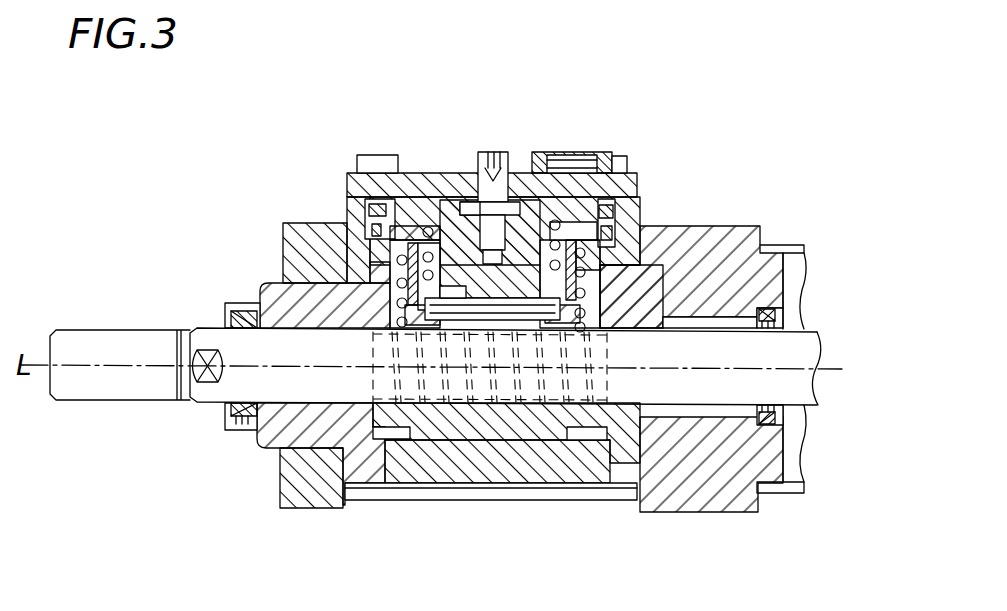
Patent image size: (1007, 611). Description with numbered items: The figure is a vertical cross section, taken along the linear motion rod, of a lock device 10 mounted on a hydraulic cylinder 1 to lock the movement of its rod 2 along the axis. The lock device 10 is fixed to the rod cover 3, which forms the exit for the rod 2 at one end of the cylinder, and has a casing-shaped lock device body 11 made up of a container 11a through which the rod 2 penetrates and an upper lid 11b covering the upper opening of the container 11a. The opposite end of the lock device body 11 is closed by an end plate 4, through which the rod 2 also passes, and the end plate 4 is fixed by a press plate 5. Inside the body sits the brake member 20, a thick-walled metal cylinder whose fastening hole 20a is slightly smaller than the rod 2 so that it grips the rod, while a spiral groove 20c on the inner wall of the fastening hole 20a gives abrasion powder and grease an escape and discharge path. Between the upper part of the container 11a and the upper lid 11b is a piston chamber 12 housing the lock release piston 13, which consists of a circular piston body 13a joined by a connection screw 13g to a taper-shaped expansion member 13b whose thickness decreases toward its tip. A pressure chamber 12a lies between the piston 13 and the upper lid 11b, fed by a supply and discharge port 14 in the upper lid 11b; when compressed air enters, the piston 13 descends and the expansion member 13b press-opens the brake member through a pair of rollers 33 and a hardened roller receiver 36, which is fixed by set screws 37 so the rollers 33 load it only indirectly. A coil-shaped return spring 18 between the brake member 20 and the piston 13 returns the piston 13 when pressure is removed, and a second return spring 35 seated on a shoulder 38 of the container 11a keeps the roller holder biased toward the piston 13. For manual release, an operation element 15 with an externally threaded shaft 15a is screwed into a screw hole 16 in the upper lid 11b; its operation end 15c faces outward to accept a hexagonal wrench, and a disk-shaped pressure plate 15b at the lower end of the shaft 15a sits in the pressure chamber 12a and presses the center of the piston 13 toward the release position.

The hydraulic cylinder 1 is at (787, 244).
The rod 2 is at (712, 378).
The rod cover 3 is at (728, 263).
The end plate 4 is at (273, 430).
The press plate 5 is at (307, 494).
The lock device 10 is at (335, 151).
The lock device body 11 is at (636, 173).
The container 11a is at (413, 462).
The upper lid 11b is at (372, 188).
The piston chamber 12 is at (312, 245).
The pressure chamber 12a is at (392, 200).
The piston 13 is at (585, 195).
The piston body 13a is at (622, 207).
The expansion member 13b is at (623, 227).
The connection screw 13g is at (376, 210).
The supply and discharge port 14 is at (568, 163).
The operation element 15 is at (499, 134).
The shaft 15a is at (500, 185).
The pressure plate 15b is at (490, 226).
The operation end 15c is at (488, 152).
The screw hole 16 is at (476, 172).
The return spring 18 is at (390, 234).
The brake member 20 is at (500, 437).
The fastening hole 20a is at (458, 402).
The spiral groove 20c is at (546, 400).
The rollers 33 is at (596, 275).
The return spring 35 is at (395, 296).
The roller receiver 36 is at (517, 312).
The set screws 37 is at (455, 308).
The shoulder 38 is at (392, 321).